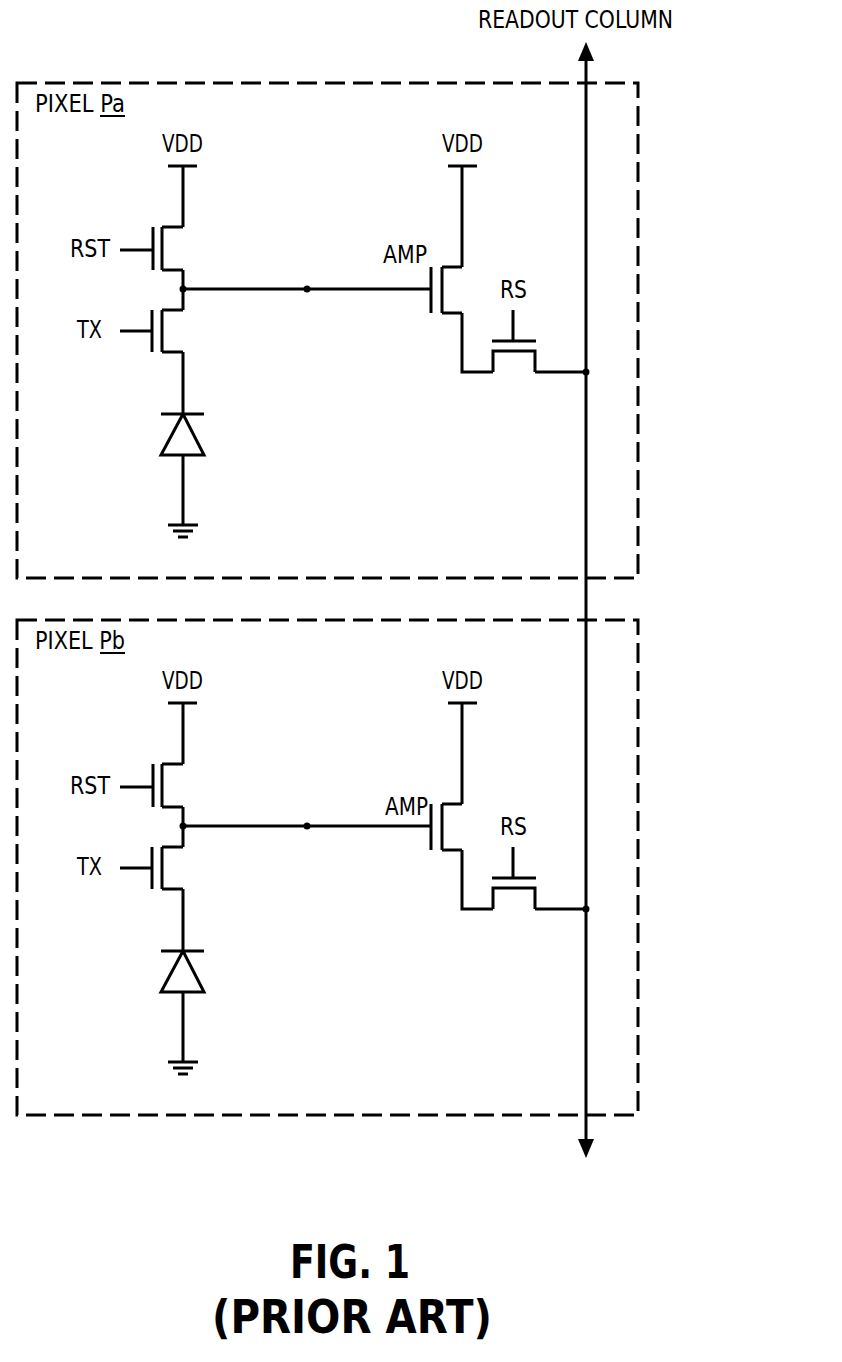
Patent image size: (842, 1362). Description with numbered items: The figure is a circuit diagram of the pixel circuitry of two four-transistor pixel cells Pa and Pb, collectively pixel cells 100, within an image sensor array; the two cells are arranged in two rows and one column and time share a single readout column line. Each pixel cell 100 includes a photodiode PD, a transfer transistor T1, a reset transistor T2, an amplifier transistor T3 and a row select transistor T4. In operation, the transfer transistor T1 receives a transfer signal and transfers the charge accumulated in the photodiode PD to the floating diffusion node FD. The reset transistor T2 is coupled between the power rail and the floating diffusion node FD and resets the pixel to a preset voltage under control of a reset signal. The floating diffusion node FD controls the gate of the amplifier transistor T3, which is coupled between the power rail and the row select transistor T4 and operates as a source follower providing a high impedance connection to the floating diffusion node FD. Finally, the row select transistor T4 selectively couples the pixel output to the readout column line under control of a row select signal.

The pixel cells 100 is at (638, 227).
The transfer transistor T1 is at (156, 599).
The reset transistor T2 is at (156, 517).
The amplifier transistor T3 is at (452, 558).
The row select transistor T4 is at (514, 616).
The photodiode PD is at (163, 703).
The floating diffusion node FD is at (306, 541).